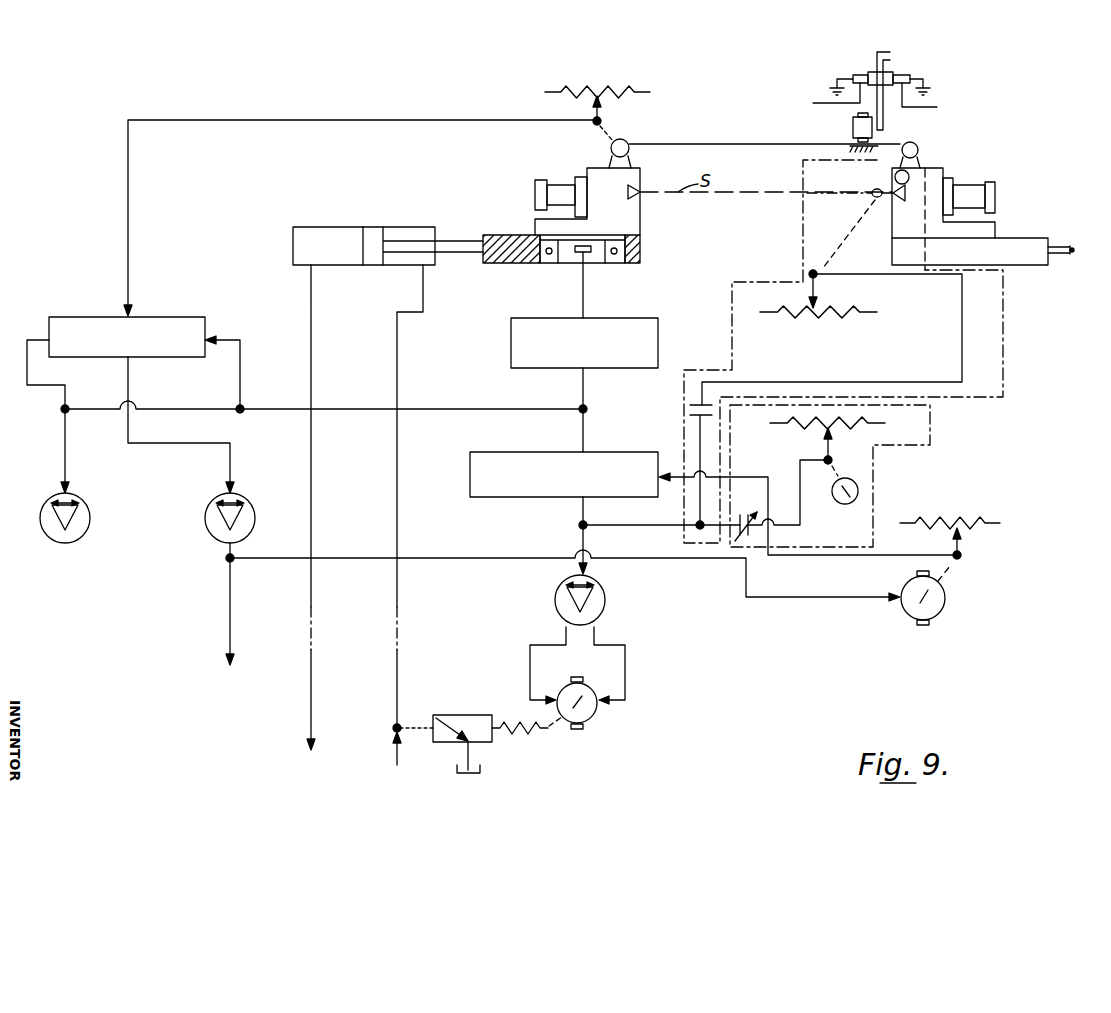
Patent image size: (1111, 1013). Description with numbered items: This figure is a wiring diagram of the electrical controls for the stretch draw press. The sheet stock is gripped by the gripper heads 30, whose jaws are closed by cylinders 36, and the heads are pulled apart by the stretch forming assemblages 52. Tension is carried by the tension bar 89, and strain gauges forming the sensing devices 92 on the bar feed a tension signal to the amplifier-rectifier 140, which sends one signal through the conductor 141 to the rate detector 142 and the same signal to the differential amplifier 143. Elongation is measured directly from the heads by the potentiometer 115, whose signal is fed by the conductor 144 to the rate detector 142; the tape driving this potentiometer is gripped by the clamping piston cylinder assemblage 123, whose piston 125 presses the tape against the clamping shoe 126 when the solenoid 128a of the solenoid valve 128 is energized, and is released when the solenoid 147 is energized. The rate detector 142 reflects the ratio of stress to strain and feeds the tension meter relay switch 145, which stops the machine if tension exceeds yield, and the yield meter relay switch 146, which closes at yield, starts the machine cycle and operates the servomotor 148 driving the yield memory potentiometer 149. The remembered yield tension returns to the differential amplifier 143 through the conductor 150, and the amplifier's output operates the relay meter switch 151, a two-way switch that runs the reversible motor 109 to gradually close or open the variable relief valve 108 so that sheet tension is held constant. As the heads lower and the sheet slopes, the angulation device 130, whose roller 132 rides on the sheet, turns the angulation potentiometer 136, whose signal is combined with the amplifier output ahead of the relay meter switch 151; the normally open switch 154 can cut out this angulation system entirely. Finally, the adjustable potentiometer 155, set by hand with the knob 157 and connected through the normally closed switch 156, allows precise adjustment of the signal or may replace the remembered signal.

The gripper head 30 is at (590, 167).
The cylinder 36 is at (528, 189).
The stretch forming assemblage 52 is at (326, 221).
The tension bar 89 is at (601, 264).
The sensing devices 92 is at (575, 255).
The variable relief valve 108 is at (481, 713).
The reversible motor 109 is at (594, 715).
The potentiometer 115 is at (632, 141).
The clamping piston cylinder assemblage 123 is at (844, 124).
The piston 125 is at (916, 144).
The clamping shoe 126 is at (848, 146).
The solenoid valve 128 is at (893, 72).
The solenoid 128a is at (910, 77).
The angulation device 130 is at (896, 181).
The roller 132 is at (873, 197).
The angulation potentiometer 136 is at (830, 314).
The amplifier-rectifier 140 is at (584, 363).
The conductor 141 is at (241, 360).
The rate detector 142 is at (116, 363).
The differential amplifier 143 is at (564, 469).
The conductor 144 is at (295, 119).
The tension meter relay switch 145 is at (90, 509).
The yield meter relay switch 146 is at (208, 533).
The solenoid 147 is at (856, 74).
The servomotor 148 is at (906, 613).
The yield memory potentiometer 149 is at (971, 528).
The conductor 150 is at (742, 477).
The relay meter switch 151 is at (607, 595).
The normally open switch 154 is at (690, 410).
The adjustable potentiometer 155 is at (856, 430).
The normally closed switch 156 is at (740, 541).
The knob 157 is at (858, 488).